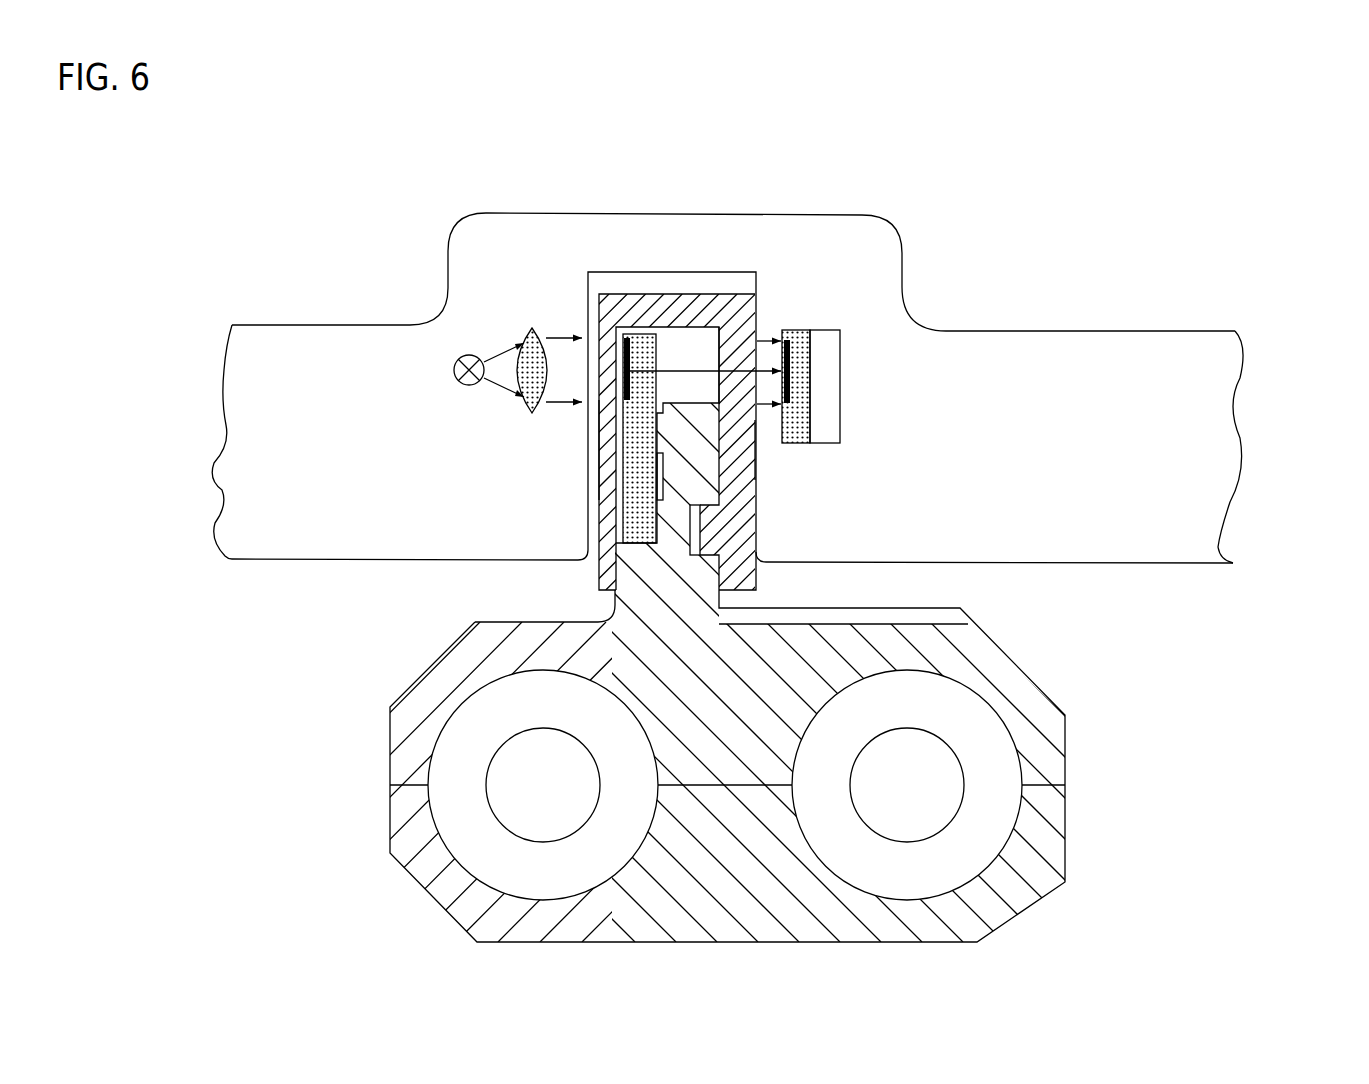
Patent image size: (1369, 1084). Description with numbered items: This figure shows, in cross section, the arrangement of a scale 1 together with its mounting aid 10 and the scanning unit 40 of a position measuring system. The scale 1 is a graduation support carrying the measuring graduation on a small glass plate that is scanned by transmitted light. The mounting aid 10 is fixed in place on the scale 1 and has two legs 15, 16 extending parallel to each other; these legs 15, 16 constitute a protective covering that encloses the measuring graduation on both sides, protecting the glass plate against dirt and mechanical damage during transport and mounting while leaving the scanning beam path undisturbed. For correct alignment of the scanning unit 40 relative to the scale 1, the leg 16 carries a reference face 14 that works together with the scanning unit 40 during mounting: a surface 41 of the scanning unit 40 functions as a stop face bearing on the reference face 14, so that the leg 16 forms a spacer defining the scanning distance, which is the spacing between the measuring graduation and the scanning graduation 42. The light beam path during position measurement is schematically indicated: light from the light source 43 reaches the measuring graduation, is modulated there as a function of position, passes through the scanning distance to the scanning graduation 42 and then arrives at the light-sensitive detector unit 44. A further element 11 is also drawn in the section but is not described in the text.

The scale 1 is at (1078, 773).
The mounting aid 10 is at (736, 277).
The spacer piece 11 is at (703, 535).
The reference face 14 is at (762, 502).
The leg 15 is at (598, 500).
The leg 16 is at (755, 461).
The scanning unit 40 is at (1262, 436).
The surface 41 is at (745, 328).
The scanning graduation 42 is at (785, 330).
The light source 43 is at (458, 357).
The light-sensitive detector unit 44 is at (825, 377).